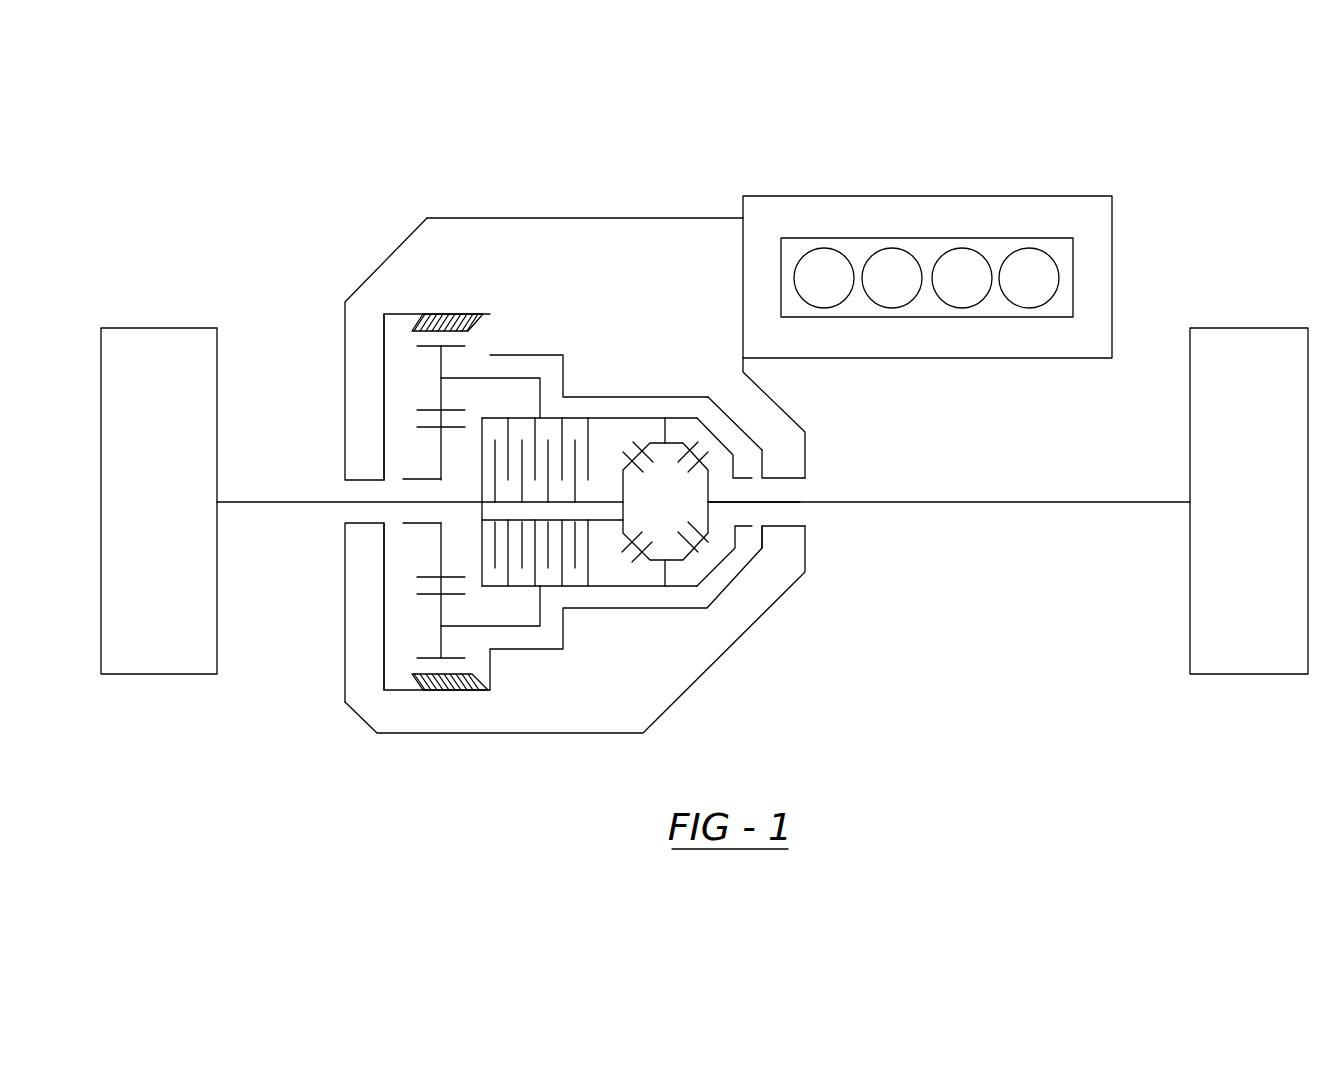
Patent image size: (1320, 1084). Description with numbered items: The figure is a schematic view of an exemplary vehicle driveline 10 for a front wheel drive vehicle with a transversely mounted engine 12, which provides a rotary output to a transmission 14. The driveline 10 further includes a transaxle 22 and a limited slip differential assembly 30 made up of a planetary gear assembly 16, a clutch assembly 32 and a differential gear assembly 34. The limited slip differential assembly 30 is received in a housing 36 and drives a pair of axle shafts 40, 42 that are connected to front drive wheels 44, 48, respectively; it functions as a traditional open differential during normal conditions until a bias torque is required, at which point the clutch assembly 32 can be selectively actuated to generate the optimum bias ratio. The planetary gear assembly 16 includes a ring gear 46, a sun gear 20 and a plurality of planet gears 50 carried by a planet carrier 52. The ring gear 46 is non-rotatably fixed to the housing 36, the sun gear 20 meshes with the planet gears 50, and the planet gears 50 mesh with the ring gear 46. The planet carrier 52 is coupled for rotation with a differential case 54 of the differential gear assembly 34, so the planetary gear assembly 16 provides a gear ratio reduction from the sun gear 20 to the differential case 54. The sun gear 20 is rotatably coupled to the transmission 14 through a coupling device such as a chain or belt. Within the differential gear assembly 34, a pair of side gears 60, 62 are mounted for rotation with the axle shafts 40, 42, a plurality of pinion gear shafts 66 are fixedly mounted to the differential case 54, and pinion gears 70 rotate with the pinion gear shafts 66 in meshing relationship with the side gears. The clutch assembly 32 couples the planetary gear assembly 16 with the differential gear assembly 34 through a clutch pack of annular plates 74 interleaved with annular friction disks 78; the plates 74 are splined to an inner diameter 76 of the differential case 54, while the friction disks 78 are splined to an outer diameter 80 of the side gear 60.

The vehicle driveline 10 is at (1218, 197).
The engine 12 is at (920, 200).
The transmission 14 is at (555, 240).
The planetary gear assembly 16 is at (400, 326).
The sun gear 20 is at (441, 453).
The transaxle 22 is at (362, 352).
The limited slip differential assembly 30 is at (628, 390).
The clutch assembly 32 is at (501, 608).
The differential gear assembly 34 is at (723, 430).
The housing 36 is at (600, 397).
The axle shaft 40 is at (266, 505).
The axle shaft 42 is at (983, 505).
The front drive wheel 44 is at (152, 352).
The ring gear 46 is at (445, 314).
The front drive wheel 48 is at (1232, 655).
The planet gears 50 is at (441, 365).
The planet carrier 52 is at (519, 378).
The differential case 54 is at (733, 452).
The side gear 60 is at (620, 520).
The side gear 62 is at (708, 512).
The pinion gear shafts 66 is at (667, 425).
The pinion gears 70 is at (650, 435).
The annular plates 74 is at (510, 572).
The inner diameter 76 is at (521, 430).
The annular friction disks 78 is at (482, 452).
The outer diameter 80 is at (607, 498).